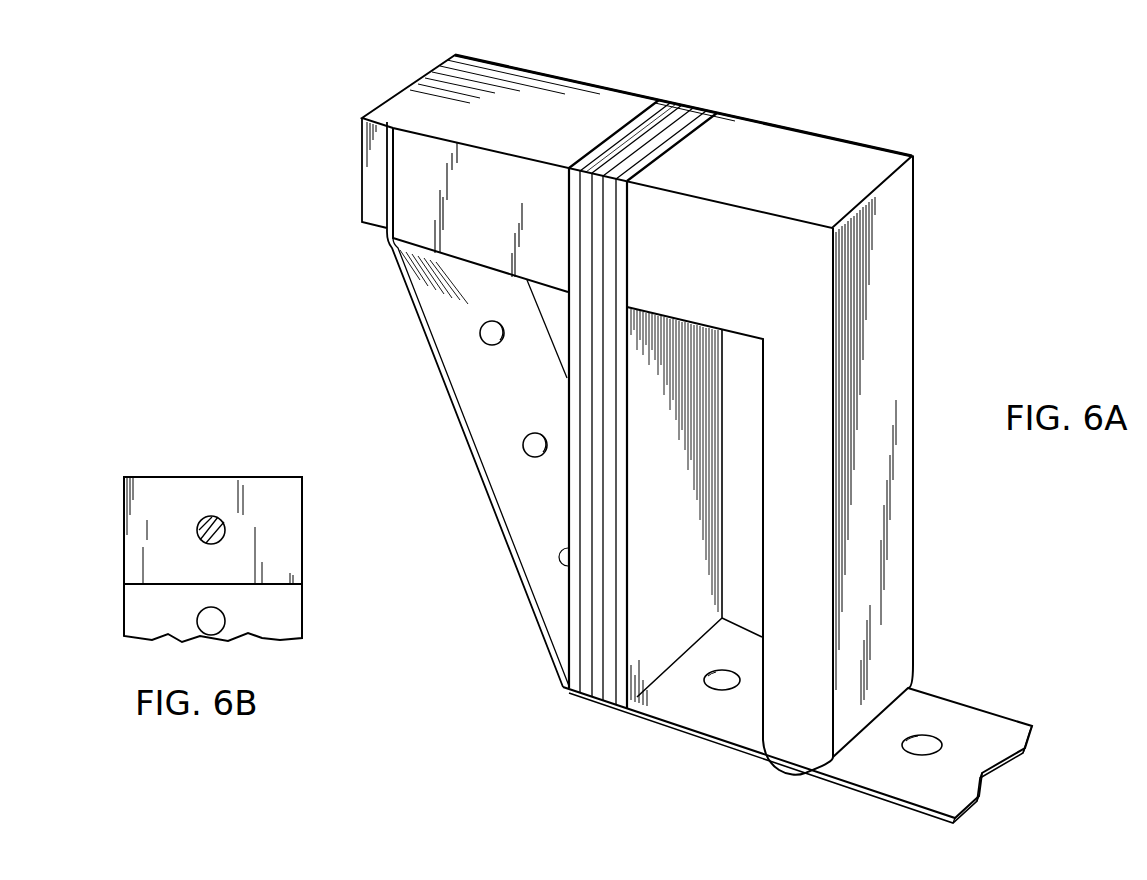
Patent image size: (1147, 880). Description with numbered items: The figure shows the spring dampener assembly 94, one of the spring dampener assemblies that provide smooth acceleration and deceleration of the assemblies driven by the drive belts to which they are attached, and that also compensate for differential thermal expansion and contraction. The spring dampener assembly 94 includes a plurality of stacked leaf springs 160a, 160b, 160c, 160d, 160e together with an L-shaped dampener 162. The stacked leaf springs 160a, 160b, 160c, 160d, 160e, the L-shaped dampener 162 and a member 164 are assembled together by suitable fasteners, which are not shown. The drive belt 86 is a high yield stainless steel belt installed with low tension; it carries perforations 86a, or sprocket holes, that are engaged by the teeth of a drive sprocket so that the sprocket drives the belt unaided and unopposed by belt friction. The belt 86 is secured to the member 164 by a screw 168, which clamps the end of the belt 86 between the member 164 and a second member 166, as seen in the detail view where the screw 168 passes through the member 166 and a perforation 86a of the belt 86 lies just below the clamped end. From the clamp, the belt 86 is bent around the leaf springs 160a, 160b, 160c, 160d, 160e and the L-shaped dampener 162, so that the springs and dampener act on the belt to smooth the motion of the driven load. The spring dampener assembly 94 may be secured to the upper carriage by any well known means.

In FIG. 6A, the spring dampener assembly 94 is at (684, 437).
In FIG. 6A, the member 166 is at (388, 112).
In FIG. 6B, the member 166 is at (213, 493).
In FIG. 6B, the screw 168 is at (212, 518).
In FIG. 6A, the member 164 is at (595, 120).
In FIG. 6A, the leaf spring 160a is at (568, 652).
In FIG. 6A, the leaf spring 160b is at (677, 100).
In FIG. 6A, the leaf spring 160c is at (587, 694).
In FIG. 6A, the leaf spring 160d is at (602, 700).
In FIG. 6A, the leaf spring 160e is at (623, 702).
In FIG. 6A, the L-shaped dampener 162 is at (898, 606).
In FIG. 6A, the drive belt 86 is at (815, 719).
In FIG. 6B, the drive belt 86 is at (248, 598).
In FIG. 6A, the perforations (sprocket holes) 86a is at (935, 738).
In FIG. 6B, the perforations (sprocket holes) 86a is at (218, 622).